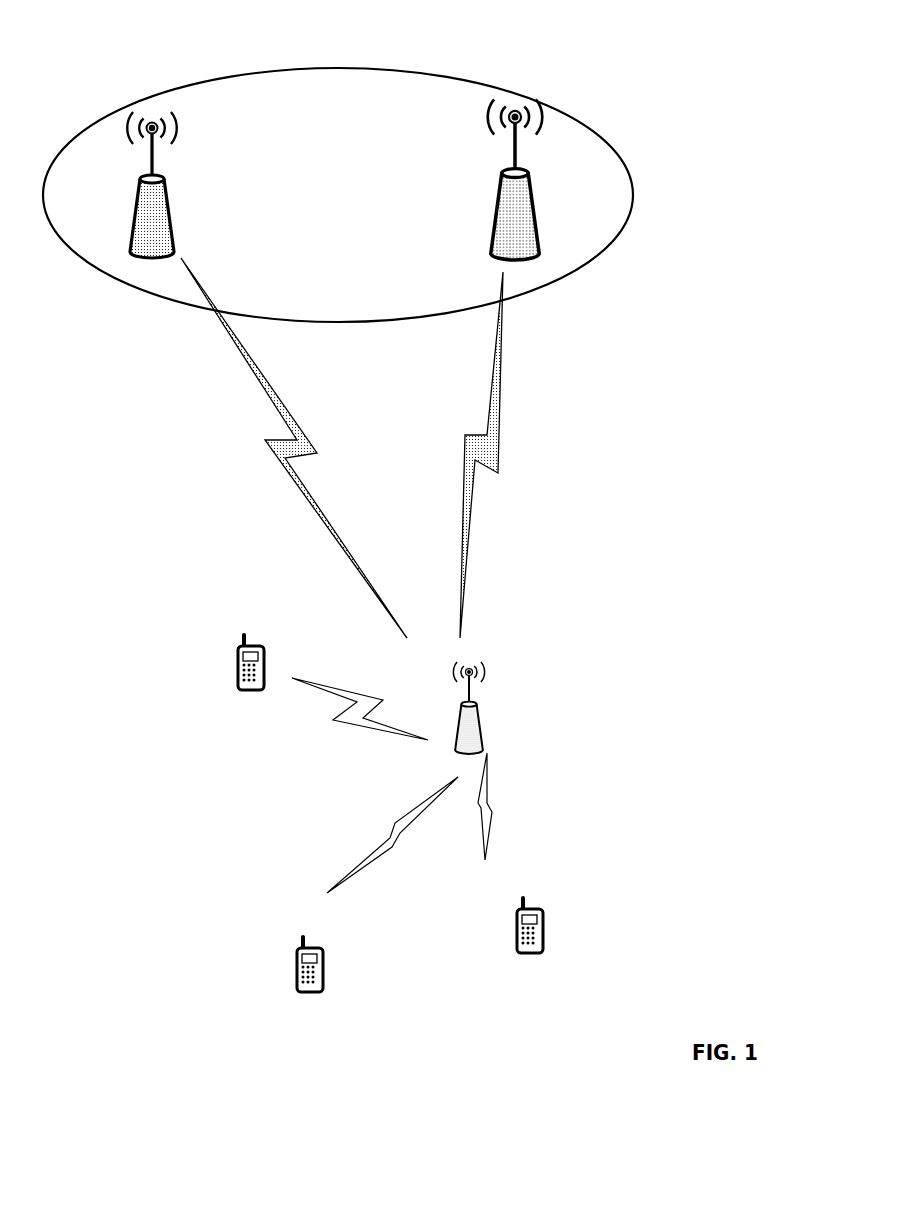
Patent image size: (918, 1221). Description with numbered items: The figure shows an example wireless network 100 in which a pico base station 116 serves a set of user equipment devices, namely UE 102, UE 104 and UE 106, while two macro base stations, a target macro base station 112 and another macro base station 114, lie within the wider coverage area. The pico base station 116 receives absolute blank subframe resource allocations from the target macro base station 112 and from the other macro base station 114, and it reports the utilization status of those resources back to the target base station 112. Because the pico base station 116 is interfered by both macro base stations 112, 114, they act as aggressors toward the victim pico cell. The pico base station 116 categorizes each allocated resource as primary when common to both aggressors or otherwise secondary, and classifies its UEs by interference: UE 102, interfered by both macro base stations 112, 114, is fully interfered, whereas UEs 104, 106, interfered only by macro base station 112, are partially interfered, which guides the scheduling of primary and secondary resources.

The wireless network 100 is at (676, 69).
The UE 102 is at (243, 693).
The UE 104 is at (288, 984).
The UE 106 is at (555, 927).
The target macro base station 112 is at (550, 128).
The macro base station 114 is at (162, 105).
The pico base station 116 is at (488, 720).